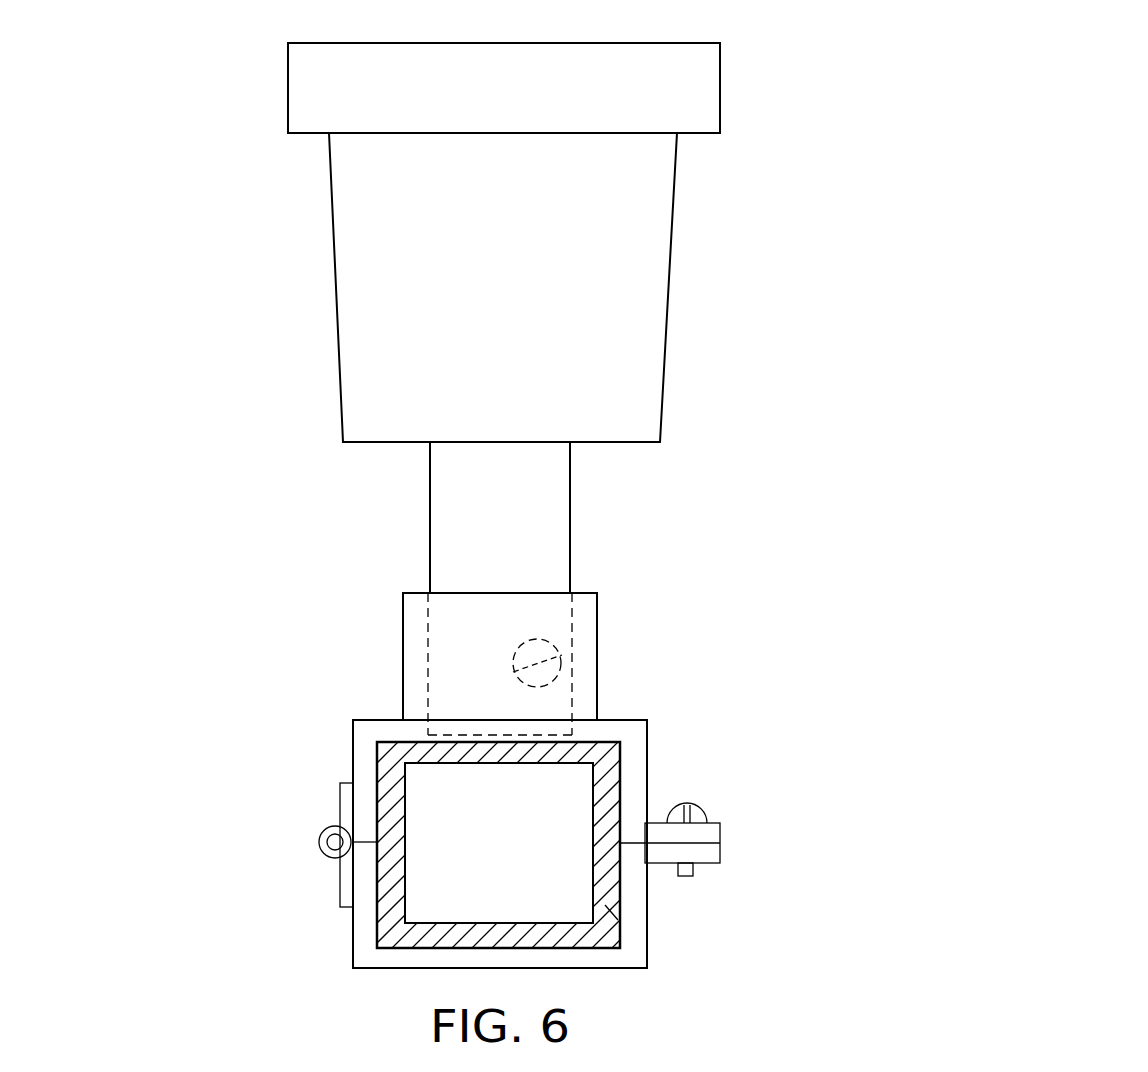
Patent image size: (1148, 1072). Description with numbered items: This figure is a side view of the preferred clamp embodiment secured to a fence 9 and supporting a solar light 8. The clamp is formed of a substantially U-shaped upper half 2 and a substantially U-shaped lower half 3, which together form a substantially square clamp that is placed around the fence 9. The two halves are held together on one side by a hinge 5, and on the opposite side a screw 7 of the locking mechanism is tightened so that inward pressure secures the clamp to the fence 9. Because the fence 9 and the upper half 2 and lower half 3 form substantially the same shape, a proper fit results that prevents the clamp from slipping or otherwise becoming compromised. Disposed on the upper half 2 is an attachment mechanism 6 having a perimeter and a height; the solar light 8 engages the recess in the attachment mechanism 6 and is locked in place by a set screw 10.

The upper half 2 is at (362, 745).
The lower half 3 is at (365, 933).
The hinge 5 is at (320, 830).
The attachment mechanism 6 is at (408, 648).
The screw 7 is at (690, 805).
The solar light 8 is at (570, 280).
The fence 9 is at (610, 920).
The set screw 10 is at (545, 665).